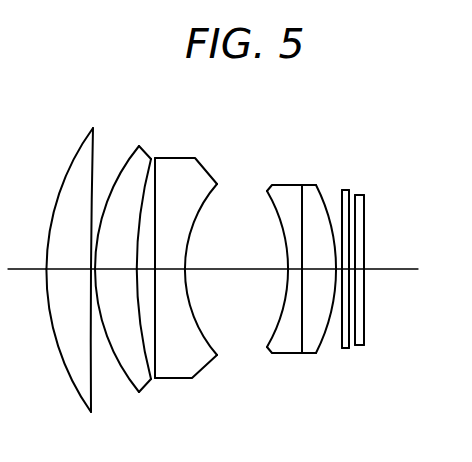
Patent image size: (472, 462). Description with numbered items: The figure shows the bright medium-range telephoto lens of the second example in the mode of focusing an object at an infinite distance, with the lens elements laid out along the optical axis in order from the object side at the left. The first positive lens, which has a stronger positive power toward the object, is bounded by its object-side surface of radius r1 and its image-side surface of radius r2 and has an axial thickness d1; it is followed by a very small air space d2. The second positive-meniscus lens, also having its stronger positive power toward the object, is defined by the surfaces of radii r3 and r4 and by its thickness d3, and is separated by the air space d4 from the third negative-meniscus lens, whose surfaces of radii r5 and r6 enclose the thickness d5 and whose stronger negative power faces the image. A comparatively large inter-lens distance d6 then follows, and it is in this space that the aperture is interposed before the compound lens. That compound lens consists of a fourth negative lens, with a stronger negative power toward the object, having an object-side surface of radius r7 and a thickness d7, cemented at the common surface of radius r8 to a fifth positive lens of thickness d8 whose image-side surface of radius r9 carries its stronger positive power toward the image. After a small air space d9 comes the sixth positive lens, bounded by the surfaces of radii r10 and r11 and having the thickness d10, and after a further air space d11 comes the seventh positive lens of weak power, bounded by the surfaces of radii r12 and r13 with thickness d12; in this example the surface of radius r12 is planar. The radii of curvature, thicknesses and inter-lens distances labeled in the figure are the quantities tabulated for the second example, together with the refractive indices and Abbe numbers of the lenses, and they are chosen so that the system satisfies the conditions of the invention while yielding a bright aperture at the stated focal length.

The radius of curvature of the first surface r1 is at (75, 152).
The radius of curvature of the second surface r2 is at (91, 124).
The radius of curvature of the third surface r3 is at (126, 162).
The radius of curvature of the fourth surface r4 is at (153, 165).
The radius of curvature of the fifth surface r5 is at (157, 164).
The radius of curvature of the sixth surface r6 is at (205, 203).
The radius of curvature of the seventh surface r7 is at (270, 204).
The radius of curvature of the eighth surface r8 is at (302, 202).
The radius of curvature of the ninth surface r9 is at (320, 198).
The radius of curvature of the tenth surface r10 is at (338, 200).
The radius of curvature of the eleventh surface r11 is at (351, 197).
The radius of curvature of the twelfth surface r12 is at (365, 197).
The radius of curvature of the thirteenth surface r13 is at (365, 208).
The thickness of the first lens d1 is at (62, 271).
The inter-lens distance between the first and second lenses d2 is at (90, 268).
The thickness of the second lens d3 is at (120, 270).
The inter-lens distance between the second and third lenses d4 is at (141, 270).
The thickness of the third lens d5 is at (167, 271).
The inter-lens distance between the third lens and the compound lens d6 is at (238, 272).
The thickness of the fourth lens d7 is at (291, 271).
The thickness of the fifth lens d8 is at (308, 271).
The inter-lens distance between the fifth and sixth lenses d9 is at (338, 272).
The thickness of the sixth lens d10 is at (346, 271).
The inter-lens distance between the sixth and seventh lenses d11 is at (352, 271).
The thickness of the seventh lens d12 is at (360, 271).